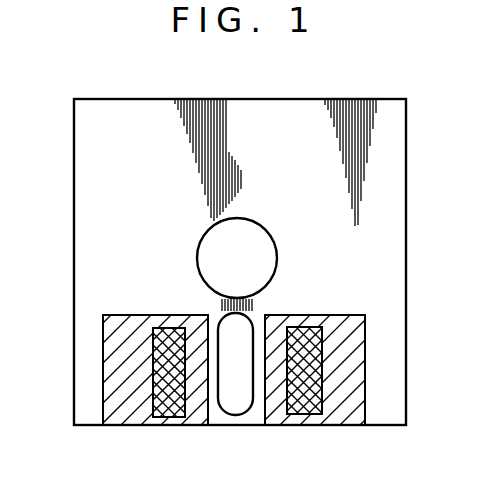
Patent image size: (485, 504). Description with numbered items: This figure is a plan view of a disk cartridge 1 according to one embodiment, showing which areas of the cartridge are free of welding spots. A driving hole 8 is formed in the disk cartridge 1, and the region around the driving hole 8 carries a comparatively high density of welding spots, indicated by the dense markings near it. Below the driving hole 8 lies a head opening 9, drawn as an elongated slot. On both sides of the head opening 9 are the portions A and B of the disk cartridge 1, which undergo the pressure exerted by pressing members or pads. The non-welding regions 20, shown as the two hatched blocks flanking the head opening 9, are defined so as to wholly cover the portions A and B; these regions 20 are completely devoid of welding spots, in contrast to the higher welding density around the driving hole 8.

The disk cartridge 1 is at (247, 110).
The driving hole 8 is at (277, 268).
The head opening 9 is at (224, 386).
The non-welding regions 20 is at (122, 318).
The portion A is at (172, 402).
The portion B is at (302, 396).